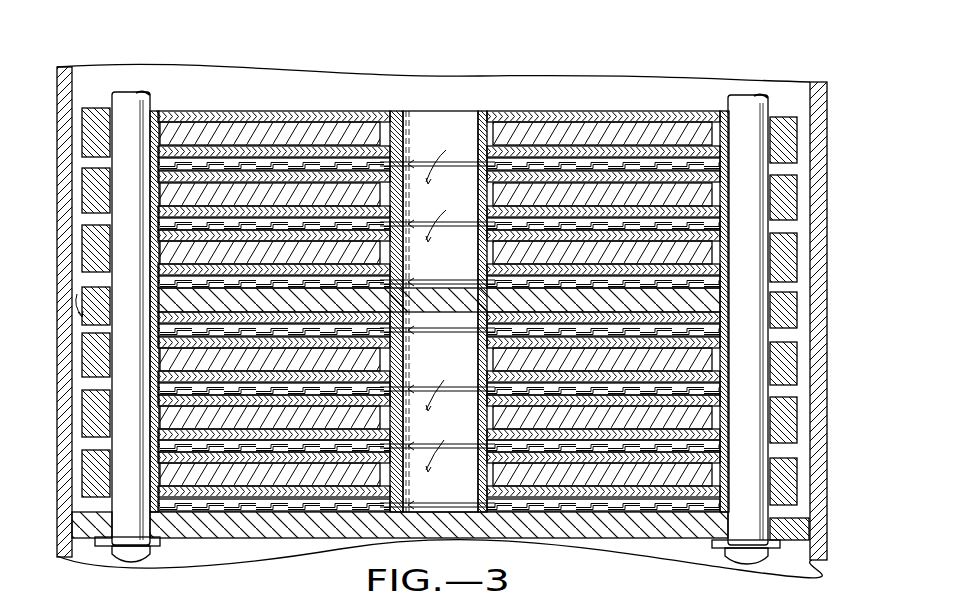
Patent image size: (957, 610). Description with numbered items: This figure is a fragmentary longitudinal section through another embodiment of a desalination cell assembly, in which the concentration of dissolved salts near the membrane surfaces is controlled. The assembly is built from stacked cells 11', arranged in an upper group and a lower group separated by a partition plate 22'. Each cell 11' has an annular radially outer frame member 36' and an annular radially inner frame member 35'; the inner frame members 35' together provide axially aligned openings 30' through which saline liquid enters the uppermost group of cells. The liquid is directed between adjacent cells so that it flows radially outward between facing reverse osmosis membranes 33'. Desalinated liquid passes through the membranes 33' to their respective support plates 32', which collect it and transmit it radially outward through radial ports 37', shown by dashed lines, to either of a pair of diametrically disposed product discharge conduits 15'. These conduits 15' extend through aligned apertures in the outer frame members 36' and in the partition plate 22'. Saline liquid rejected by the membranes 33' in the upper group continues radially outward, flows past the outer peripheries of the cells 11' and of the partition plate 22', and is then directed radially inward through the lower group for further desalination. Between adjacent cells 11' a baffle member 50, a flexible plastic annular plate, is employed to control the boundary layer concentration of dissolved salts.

The annular radially outer frame member 36' is at (85, 266).
The product discharge conduit 15' is at (442, 299).
The cell 11' is at (439, 78).
The membrane 33' is at (439, 96).
The support plate 32' is at (436, 90).
The baffle member 50 is at (355, 162).
The annular radially inner frame member 35' is at (437, 273).
The axially aligned opening 30' is at (451, 300).
The radial port 37' is at (439, 297).
The partition plate 22' is at (819, 328).